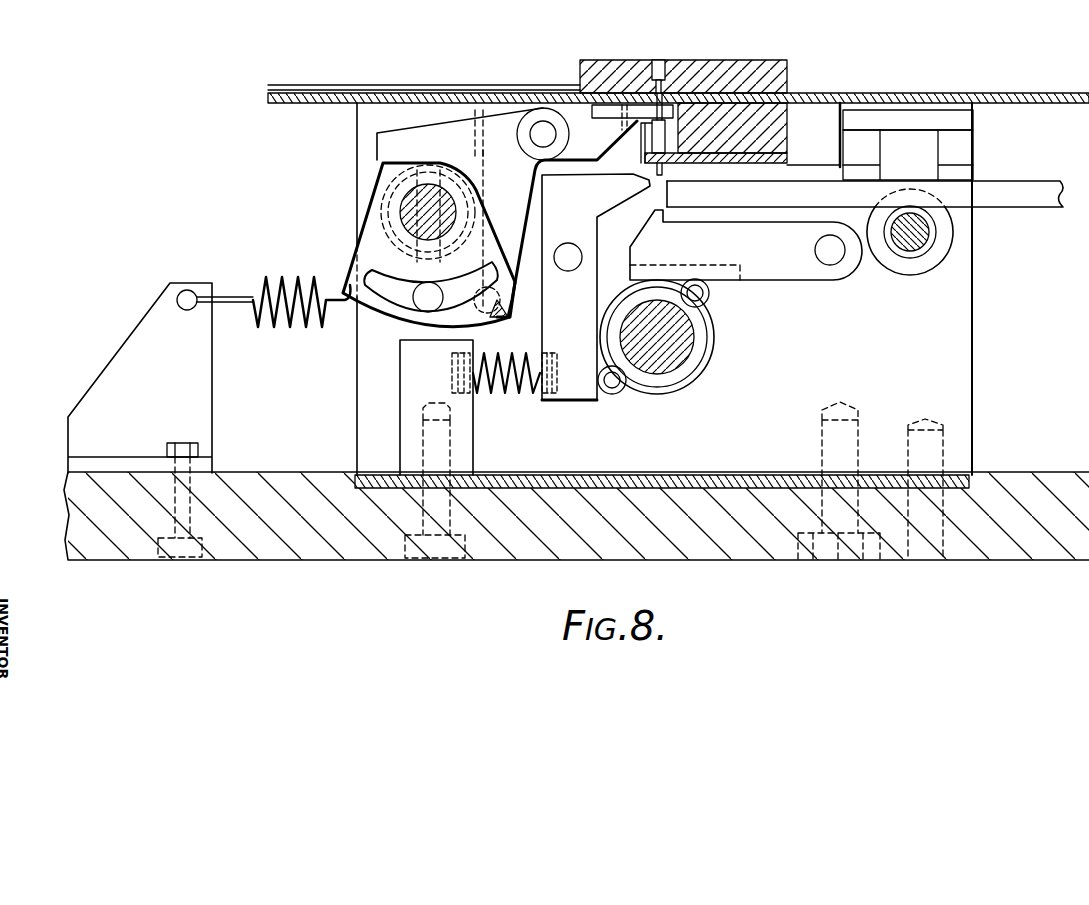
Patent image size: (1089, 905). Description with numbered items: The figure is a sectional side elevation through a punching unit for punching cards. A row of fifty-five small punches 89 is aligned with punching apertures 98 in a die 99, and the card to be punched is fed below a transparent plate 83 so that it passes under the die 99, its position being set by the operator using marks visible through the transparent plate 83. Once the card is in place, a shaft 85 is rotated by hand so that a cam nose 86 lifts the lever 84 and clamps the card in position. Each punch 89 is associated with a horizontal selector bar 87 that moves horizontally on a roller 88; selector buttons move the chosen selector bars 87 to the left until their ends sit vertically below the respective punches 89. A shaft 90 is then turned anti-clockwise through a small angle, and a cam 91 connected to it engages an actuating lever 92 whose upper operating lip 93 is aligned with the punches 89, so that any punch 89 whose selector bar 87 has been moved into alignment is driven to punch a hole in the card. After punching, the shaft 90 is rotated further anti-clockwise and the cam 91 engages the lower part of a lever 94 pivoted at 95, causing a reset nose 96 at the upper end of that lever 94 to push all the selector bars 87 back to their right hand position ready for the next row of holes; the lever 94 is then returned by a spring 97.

The transparent plate 83 is at (471, 78).
The lever 84 is at (388, 147).
The shaft 85 is at (410, 214).
The cam nose 86 is at (388, 172).
The selector bar 87 is at (1017, 200).
The roller 88 is at (903, 262).
The punch 89 is at (666, 140).
The shaft 90 is at (688, 340).
The cam 91 is at (707, 292).
The actuating lever 92 is at (812, 272).
The operating lip 93 is at (652, 212).
The lever 94 is at (542, 340).
The pivot 95 is at (568, 243).
The reset nose 96 is at (667, 192).
The spring 97 is at (490, 397).
The punching aperture 98 is at (660, 94).
The die 99 is at (584, 60).